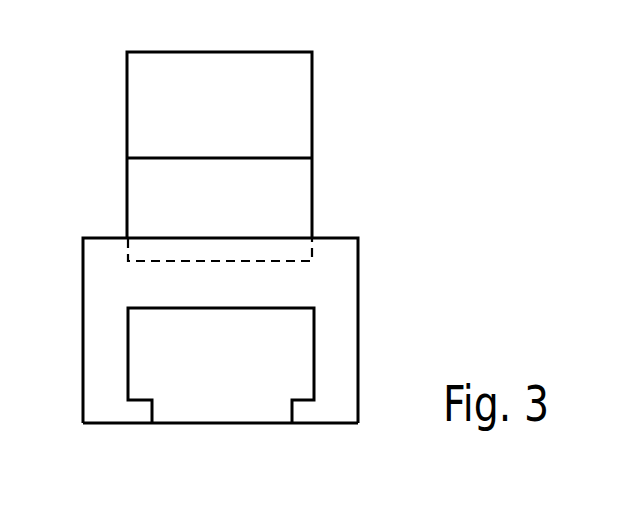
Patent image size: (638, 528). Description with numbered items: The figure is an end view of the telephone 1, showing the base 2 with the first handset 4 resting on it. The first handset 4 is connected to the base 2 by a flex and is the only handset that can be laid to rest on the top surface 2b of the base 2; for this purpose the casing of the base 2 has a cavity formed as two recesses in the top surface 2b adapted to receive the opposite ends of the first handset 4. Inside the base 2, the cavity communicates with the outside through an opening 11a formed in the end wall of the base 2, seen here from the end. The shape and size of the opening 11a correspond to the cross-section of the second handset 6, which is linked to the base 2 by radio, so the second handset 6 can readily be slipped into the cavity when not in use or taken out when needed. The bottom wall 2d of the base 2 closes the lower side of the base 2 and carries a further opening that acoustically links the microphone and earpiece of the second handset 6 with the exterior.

The telephone 1 is at (370, 127).
The first handset 4 is at (148, 105).
The base 2 is at (345, 293).
The top surface 2b is at (341, 234).
The bottom wall 2d is at (321, 427).
The second handset 6 is at (219, 392).
The opening 11a is at (221, 365).